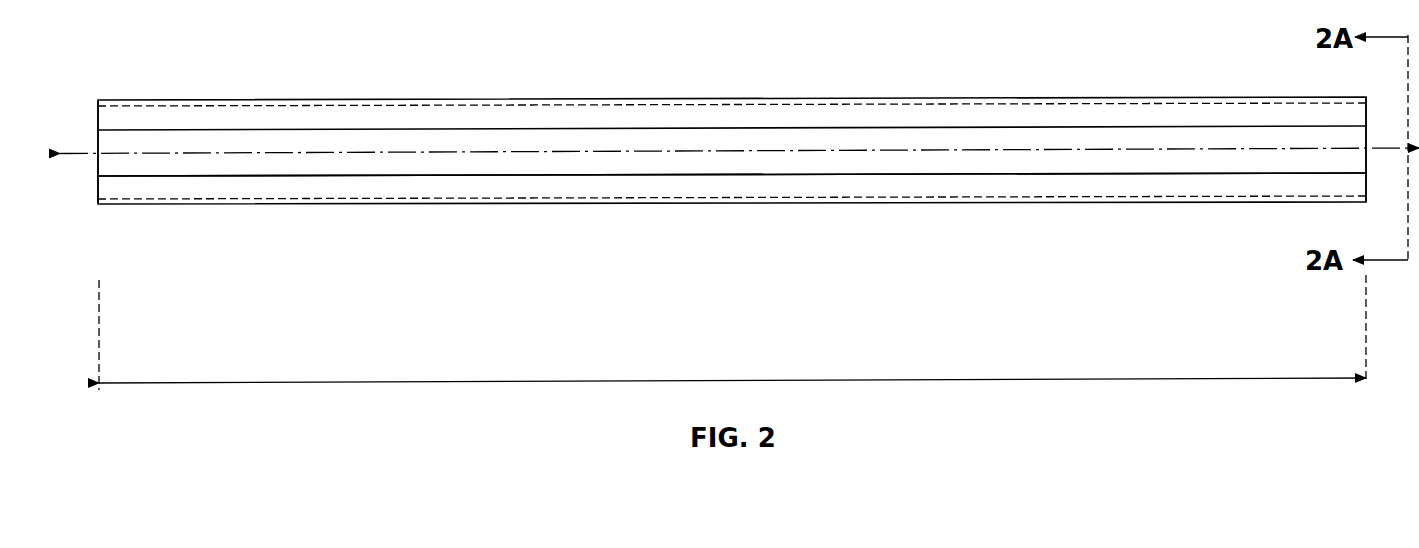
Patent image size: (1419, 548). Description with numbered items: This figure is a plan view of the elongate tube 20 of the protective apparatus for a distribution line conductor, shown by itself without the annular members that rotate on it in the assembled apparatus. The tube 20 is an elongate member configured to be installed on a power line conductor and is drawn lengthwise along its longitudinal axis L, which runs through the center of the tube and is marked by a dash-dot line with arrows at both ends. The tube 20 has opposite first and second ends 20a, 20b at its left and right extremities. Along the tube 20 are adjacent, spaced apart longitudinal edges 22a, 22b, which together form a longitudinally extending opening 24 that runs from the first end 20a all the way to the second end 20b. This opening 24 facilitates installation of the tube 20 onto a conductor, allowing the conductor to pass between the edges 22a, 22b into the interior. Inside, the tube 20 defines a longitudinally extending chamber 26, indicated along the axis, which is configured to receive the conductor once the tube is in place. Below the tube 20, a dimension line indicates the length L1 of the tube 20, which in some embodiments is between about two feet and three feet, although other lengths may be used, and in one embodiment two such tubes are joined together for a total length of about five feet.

The tube 20 is at (750, 99).
The first end 20a is at (98, 121).
The second end 20b is at (1366, 112).
The first longitudinal edge 22a is at (521, 130).
The second longitudinal edge 22b is at (556, 177).
The longitudinally extending opening 24 is at (492, 173).
The longitudinally extending chamber 26 is at (402, 156).
The longitudinal axis L is at (1403, 148).
The length L1 is at (1048, 381).